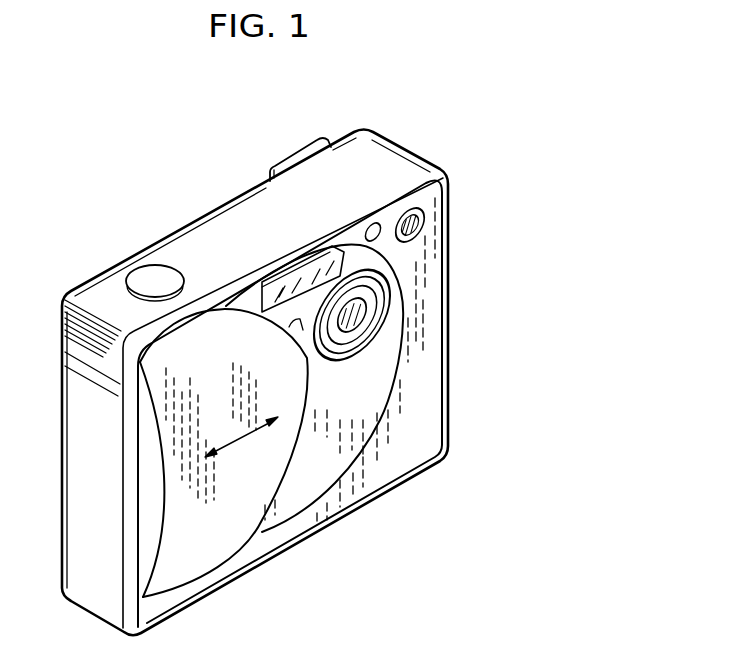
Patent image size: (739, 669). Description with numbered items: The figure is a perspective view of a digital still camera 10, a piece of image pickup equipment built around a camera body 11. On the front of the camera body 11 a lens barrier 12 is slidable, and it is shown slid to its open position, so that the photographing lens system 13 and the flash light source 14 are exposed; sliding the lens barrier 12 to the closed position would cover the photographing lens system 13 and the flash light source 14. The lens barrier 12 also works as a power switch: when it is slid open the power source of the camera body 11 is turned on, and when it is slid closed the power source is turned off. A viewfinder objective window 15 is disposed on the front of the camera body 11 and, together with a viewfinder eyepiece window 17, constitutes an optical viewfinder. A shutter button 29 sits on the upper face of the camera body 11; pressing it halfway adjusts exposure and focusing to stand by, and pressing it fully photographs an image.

The digital still camera 10 is at (200, 132).
The camera body 11 is at (433, 160).
The lens barrier 12 is at (287, 396).
The photographing lens system 13 is at (366, 316).
The flash light source 14 is at (304, 268).
The viewfinder objective window 15 is at (421, 230).
The viewfinder eyepiece window 17 is at (298, 150).
The shutter button 29 is at (152, 270).